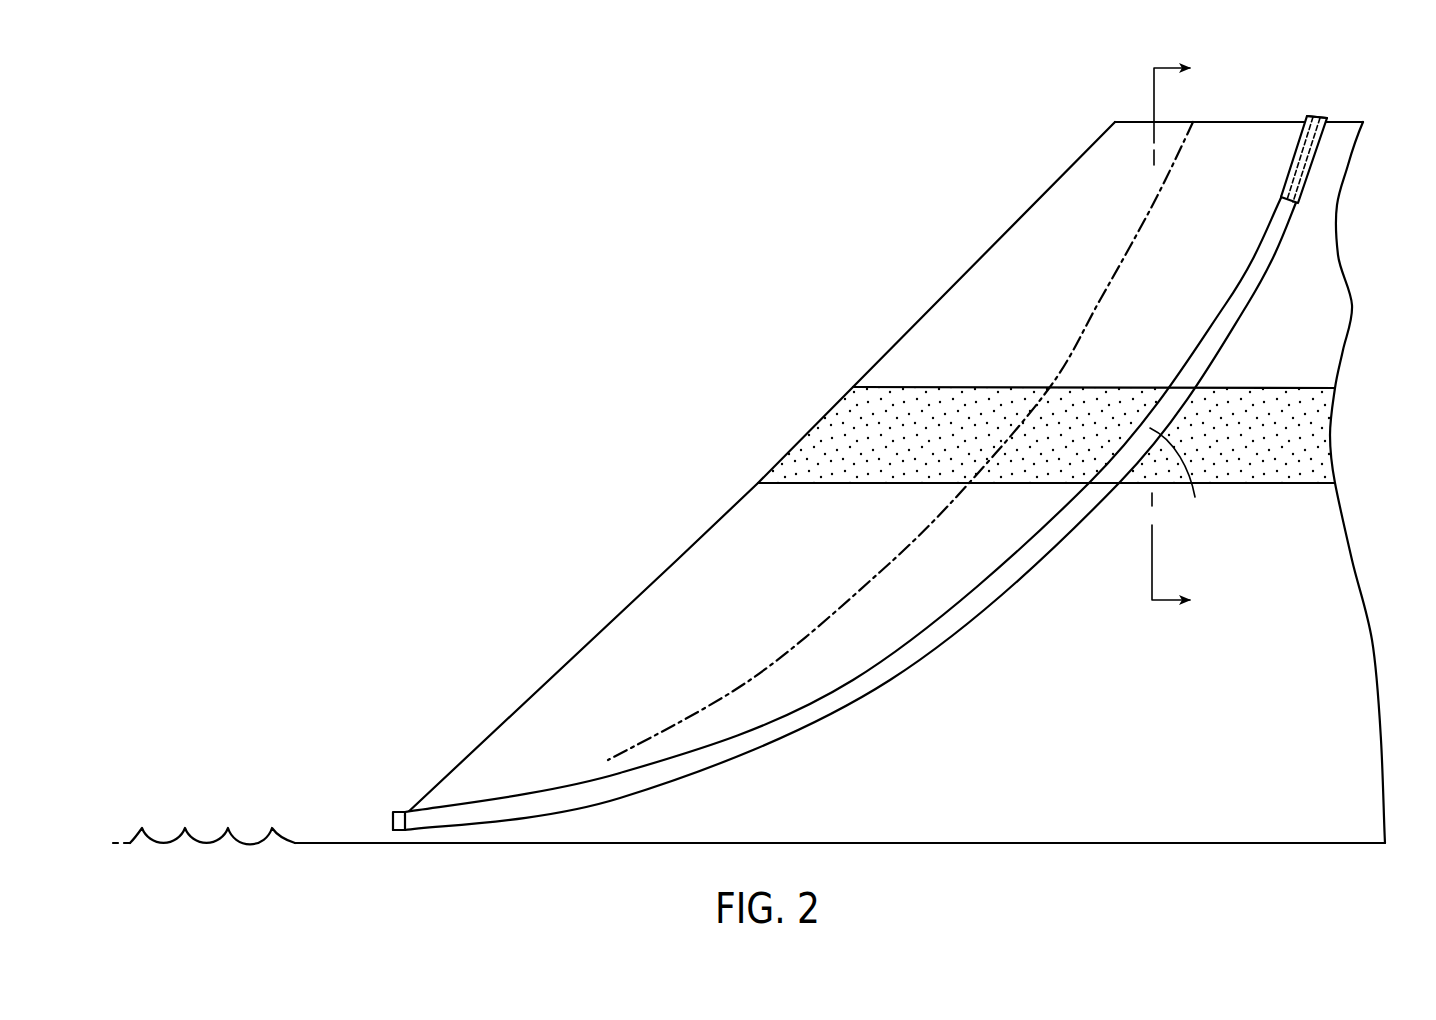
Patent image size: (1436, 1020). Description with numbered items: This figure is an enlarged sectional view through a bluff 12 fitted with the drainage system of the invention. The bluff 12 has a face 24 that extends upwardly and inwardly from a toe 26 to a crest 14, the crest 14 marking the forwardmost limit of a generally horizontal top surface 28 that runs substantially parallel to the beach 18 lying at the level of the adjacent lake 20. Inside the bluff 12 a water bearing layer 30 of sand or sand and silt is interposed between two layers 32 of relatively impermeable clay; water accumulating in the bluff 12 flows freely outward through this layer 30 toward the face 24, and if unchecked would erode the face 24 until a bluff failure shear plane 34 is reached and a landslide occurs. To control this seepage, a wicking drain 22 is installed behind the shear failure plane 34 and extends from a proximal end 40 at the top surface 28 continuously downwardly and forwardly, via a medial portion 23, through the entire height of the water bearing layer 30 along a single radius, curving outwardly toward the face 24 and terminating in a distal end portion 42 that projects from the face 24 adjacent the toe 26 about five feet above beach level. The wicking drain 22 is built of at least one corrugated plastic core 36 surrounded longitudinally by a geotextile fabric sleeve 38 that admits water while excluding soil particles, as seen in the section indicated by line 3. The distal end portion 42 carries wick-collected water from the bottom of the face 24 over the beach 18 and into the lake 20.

The section line 3- 3 is at (1186, 335).
The bluff 12 is at (866, 311).
The crest 14 is at (1113, 121).
The beach 18 is at (328, 845).
The lake 20 is at (204, 845).
The wicking drain 22 is at (996, 616).
The medial portion 23 is at (1178, 480).
The face 24 is at (727, 508).
The toe 26 is at (395, 838).
The top surface 28 is at (1260, 121).
The water bearing layer 30 is at (1290, 405).
The layers of relatively impermeable clay 32 is at (1326, 254).
The bluff failure shear plane 34 is at (880, 572).
The corrugated plastic core 36 is at (1290, 168).
The geotextile fabric sleeve 38 is at (1272, 213).
The proximal end 40 is at (1313, 116).
The distal end portion 42 is at (403, 822).